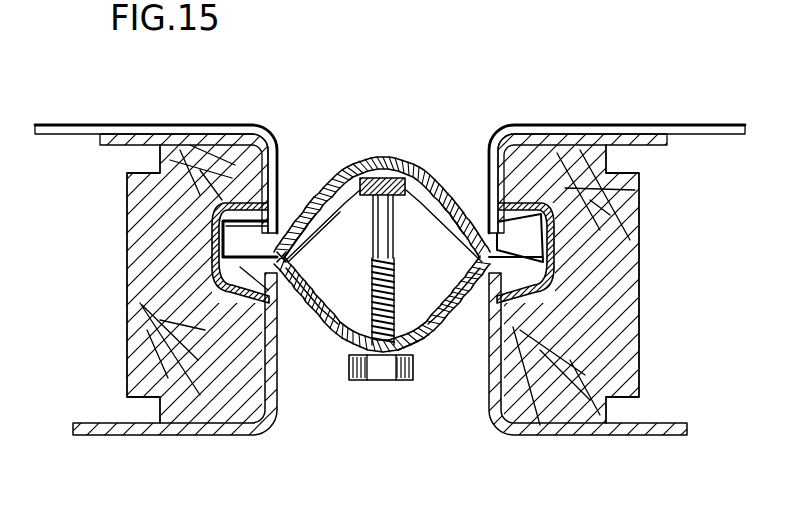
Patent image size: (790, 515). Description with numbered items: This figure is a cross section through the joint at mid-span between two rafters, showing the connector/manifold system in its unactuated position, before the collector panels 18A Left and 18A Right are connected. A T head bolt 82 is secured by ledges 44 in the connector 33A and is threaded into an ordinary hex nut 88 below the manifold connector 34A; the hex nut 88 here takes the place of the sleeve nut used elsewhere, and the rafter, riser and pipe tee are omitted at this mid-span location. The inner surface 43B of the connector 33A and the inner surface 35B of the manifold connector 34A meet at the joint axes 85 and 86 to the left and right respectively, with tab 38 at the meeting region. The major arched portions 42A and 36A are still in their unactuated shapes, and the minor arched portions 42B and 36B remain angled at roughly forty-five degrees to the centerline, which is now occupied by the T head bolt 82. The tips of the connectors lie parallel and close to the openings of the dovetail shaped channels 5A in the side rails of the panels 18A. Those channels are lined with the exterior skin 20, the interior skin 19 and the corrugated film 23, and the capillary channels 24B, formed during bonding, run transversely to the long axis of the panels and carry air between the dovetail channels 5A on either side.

The dovetail shaped channel 5A is at (247, 270).
The collector panel 18A is at (105, 301).
The interior skin 19 is at (120, 428).
The exterior skin 20 is at (122, 143).
The corrugated film 23 is at (713, 130).
The capillary channel 24B is at (83, 125).
The connector 33A is at (316, 208).
The manifold connector 34A is at (322, 310).
The inner surface 35B is at (430, 314).
The major arched portion 36A is at (423, 348).
The minor arched portion 36B is at (460, 310).
The hinge tab 38 is at (307, 267).
The major arched portion 42A is at (407, 170).
The minor arched portion 42B is at (463, 207).
The inner surface 43B is at (302, 226).
The ledge 44 is at (350, 200).
The T head bolt 82 is at (370, 180).
The joint axis 85 is at (218, 256).
The joint axis 86 is at (550, 273).
The hex nut 88 is at (385, 372).